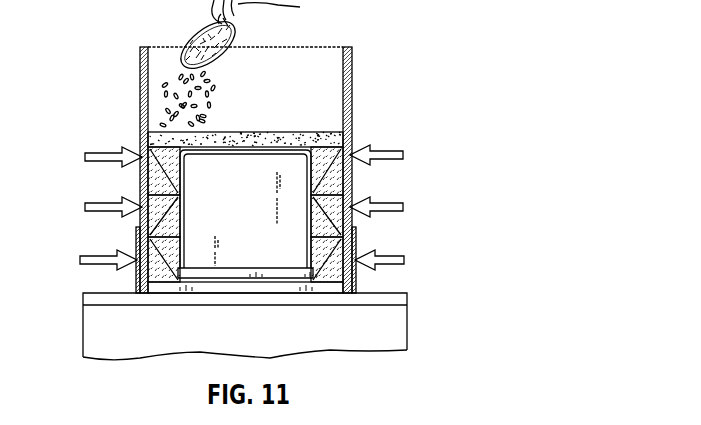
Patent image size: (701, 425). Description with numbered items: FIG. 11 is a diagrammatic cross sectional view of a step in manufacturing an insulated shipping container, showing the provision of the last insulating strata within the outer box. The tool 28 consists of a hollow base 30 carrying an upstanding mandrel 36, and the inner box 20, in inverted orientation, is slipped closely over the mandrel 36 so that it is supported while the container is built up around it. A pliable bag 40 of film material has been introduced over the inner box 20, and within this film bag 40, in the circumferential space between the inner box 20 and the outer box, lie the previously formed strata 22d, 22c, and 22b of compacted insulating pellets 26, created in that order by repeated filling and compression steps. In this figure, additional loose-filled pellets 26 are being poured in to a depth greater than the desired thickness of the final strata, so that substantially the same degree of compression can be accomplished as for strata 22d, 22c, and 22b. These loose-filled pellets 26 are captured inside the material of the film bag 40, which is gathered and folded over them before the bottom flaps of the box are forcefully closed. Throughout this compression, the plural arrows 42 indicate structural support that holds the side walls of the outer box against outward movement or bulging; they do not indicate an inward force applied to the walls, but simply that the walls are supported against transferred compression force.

The inner box 20 is at (271, 131).
The strata 22b is at (449, 147).
The strata 22c is at (449, 193).
The strata 22d is at (449, 237).
The insulating pellet 26 is at (158, 95).
The tool 28 is at (376, 98).
The hollow base 30 is at (256, 338).
The mandrel 36 is at (256, 215).
The pliable bag 40 is at (313, 58).
The arrows 42 is at (88, 151).